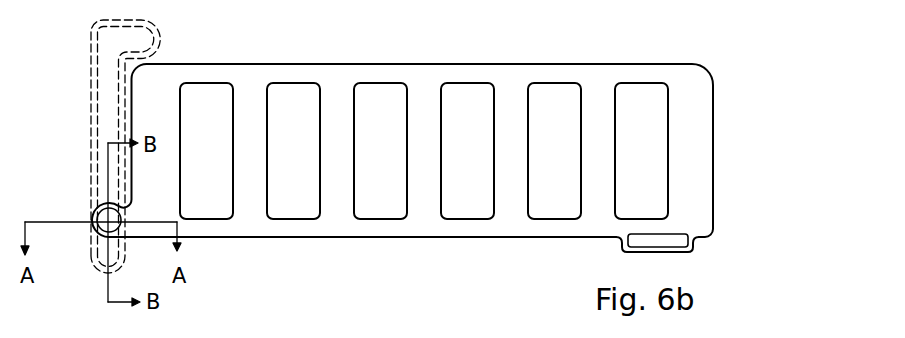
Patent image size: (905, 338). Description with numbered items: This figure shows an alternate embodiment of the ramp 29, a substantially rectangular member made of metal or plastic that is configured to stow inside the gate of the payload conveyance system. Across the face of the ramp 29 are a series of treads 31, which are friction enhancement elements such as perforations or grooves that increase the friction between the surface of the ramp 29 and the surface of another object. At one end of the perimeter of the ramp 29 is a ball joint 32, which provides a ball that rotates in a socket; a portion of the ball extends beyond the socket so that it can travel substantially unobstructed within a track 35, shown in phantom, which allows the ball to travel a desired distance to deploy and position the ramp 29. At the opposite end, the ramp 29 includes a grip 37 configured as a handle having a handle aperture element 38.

The ramp 29 is at (682, 143).
The tread 31 is at (652, 88).
The ball joint 32 is at (92, 220).
The track 35 is at (125, 42).
The grip 37 is at (678, 252).
The handle aperture element 38 is at (668, 238).